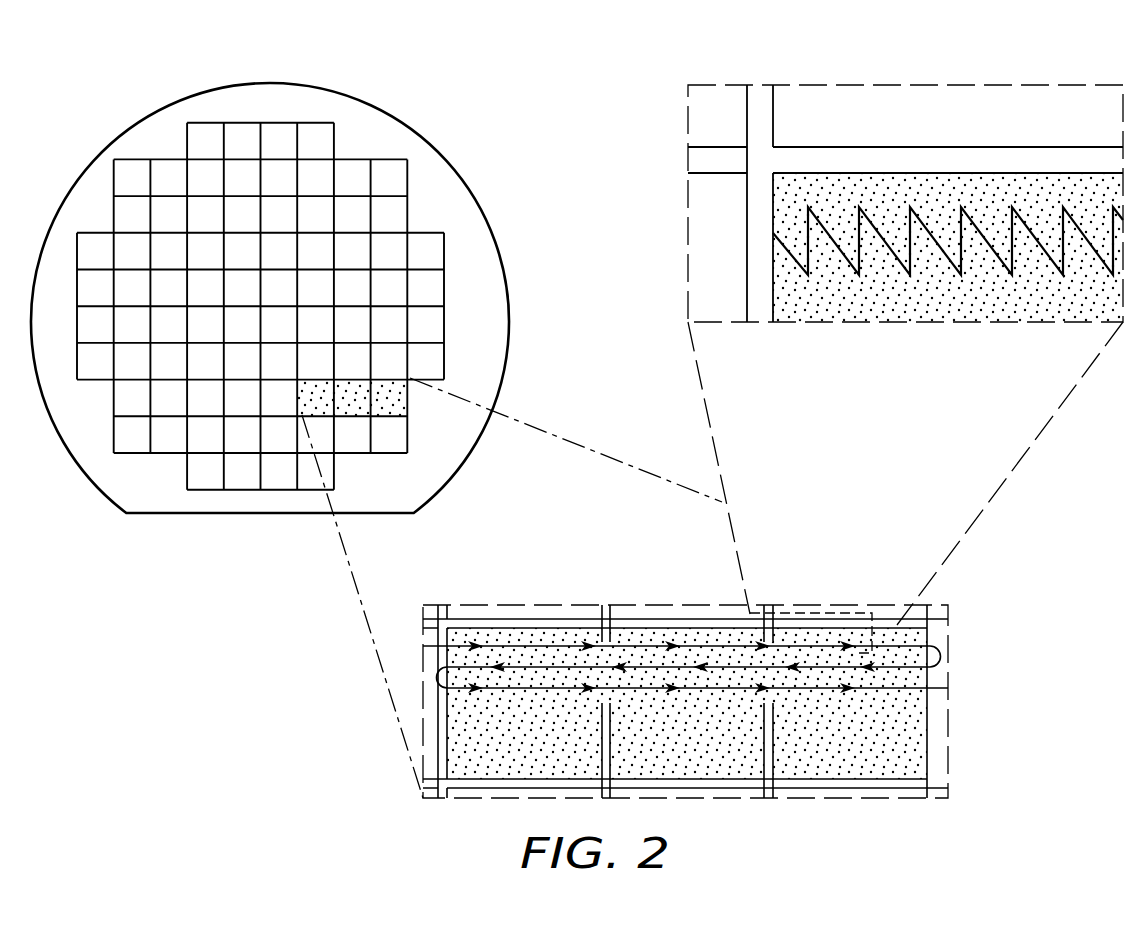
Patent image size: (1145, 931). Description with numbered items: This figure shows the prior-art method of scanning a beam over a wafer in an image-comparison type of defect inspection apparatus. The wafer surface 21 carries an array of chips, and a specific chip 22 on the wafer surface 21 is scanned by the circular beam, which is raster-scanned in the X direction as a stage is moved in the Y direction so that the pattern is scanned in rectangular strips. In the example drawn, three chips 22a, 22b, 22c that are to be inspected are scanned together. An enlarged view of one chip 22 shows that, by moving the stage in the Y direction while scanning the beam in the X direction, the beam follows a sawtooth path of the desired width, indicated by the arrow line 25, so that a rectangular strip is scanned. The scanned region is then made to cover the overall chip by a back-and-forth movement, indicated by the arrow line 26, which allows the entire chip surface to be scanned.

The wafer surface 21 is at (313, 100).
The chip 22 is at (408, 168).
The first chip to be inspected 22a is at (317, 403).
The second chip to be inspected 22b is at (362, 407).
The third chip to be inspected 22c is at (410, 398).
The arrow line showing sawtooth path 25 is at (950, 262).
The arrow line showing back-and-forth movement 26 is at (492, 646).